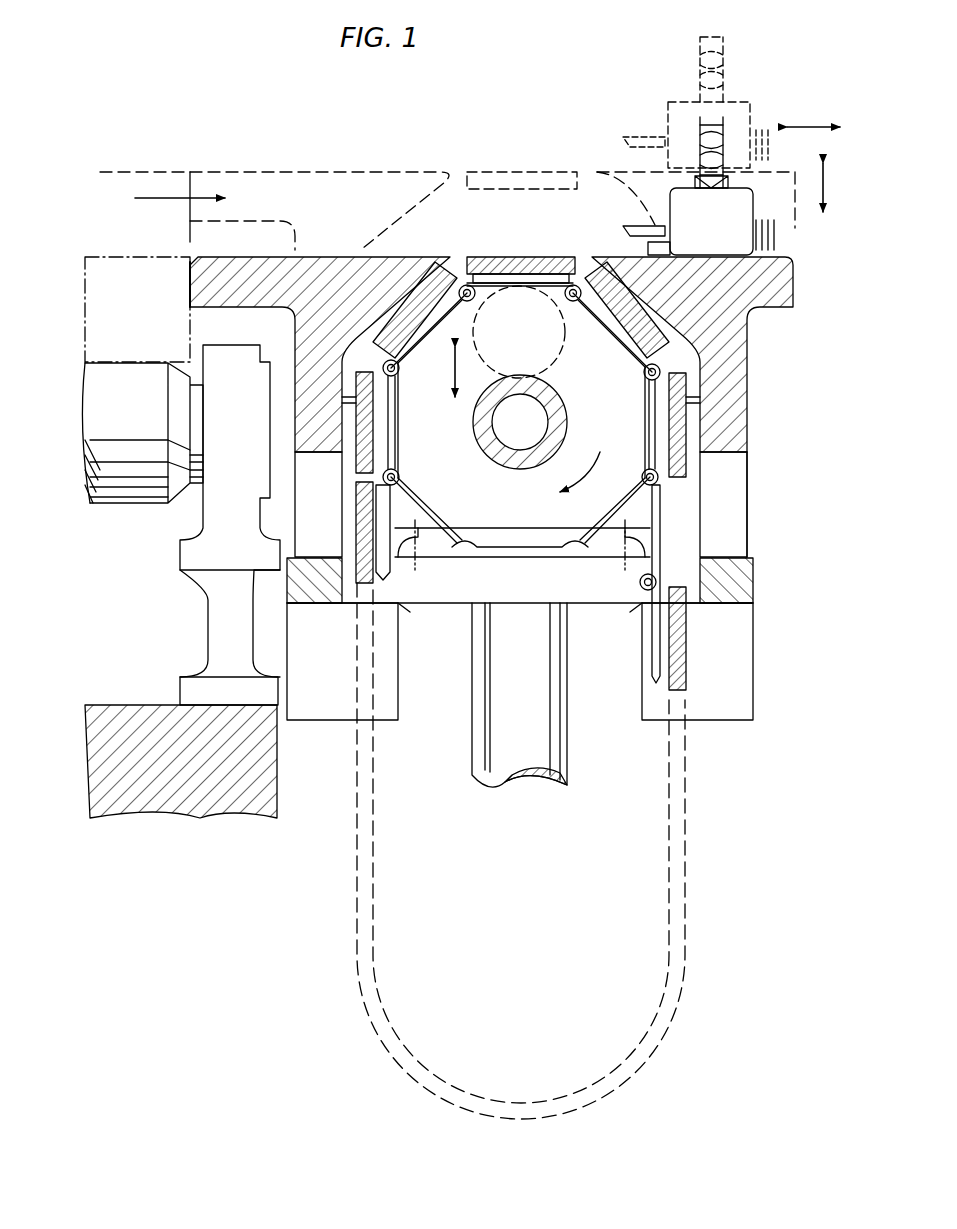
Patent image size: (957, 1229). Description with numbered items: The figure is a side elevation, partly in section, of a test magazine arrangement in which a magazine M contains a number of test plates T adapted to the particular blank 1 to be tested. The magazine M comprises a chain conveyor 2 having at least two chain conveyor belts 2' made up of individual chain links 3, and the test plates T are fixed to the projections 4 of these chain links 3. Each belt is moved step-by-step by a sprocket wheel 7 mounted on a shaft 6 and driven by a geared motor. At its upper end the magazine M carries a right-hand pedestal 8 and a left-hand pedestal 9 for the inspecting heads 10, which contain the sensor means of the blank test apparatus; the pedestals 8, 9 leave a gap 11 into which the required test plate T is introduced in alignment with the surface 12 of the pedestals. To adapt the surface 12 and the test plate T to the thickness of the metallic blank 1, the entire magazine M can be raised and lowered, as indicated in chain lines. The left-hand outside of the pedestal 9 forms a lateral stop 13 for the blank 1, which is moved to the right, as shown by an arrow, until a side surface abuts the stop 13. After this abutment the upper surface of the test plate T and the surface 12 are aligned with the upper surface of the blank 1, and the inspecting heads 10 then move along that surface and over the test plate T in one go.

The blank 1 is at (141, 316).
The chain conveyor 2 is at (553, 661).
The chain conveyor belts 2' is at (574, 851).
The chain links 3 is at (640, 588).
The projections 4 is at (660, 547).
The shaft 6 is at (500, 460).
The sprocket wheel 7 is at (601, 394).
The right-hand pedestal 8 is at (733, 285).
The left-hand pedestal 9 is at (327, 290).
The inspecting heads 10 is at (742, 205).
The gap 11 is at (458, 258).
The surface 12 is at (257, 257).
The lateral stop 13 is at (183, 276).
The test plates T is at (507, 265).
The magazine M is at (767, 508).